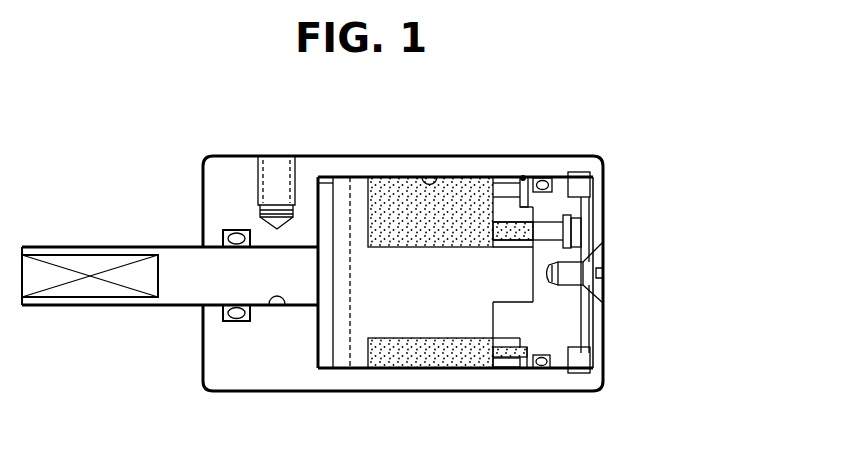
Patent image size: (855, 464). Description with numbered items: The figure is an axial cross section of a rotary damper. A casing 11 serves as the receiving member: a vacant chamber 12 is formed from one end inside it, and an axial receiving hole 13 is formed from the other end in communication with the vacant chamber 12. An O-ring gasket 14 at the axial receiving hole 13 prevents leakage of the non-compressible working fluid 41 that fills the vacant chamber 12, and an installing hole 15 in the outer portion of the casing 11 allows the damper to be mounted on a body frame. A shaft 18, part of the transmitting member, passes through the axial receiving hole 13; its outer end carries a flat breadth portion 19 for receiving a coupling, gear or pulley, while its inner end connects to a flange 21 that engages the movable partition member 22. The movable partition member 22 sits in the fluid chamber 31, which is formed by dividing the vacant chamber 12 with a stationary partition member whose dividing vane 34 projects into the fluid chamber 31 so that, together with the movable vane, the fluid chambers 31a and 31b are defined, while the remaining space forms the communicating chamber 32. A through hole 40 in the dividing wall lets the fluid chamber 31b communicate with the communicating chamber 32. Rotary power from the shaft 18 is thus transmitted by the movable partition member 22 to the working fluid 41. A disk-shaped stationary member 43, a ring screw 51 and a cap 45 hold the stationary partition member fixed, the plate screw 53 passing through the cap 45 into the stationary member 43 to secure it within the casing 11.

The casing 11 is at (350, 160).
The vacant chamber 12 is at (435, 176).
The axial receiving hole 13 is at (278, 306).
The O-ring gasket 14 is at (237, 320).
The installing hole 15 is at (278, 163).
The shaft 18 is at (190, 282).
The flat breadth portion 19 is at (105, 262).
The flange 21 is at (315, 345).
The movable partition member 22 is at (398, 316).
The fluid chamber 31 is at (391, 194).
The fluid chamber 31a is at (468, 194).
The fluid chamber 31b is at (430, 352).
The communicating chamber 32 is at (523, 173).
The dividing vane 34 is at (515, 320).
The through hole 40 is at (503, 360).
The working fluid 41 is at (412, 297).
The stationary member 43 is at (560, 332).
The cap 45 is at (600, 182).
The ring screw 51 is at (578, 172).
The plate screw 53 is at (598, 263).